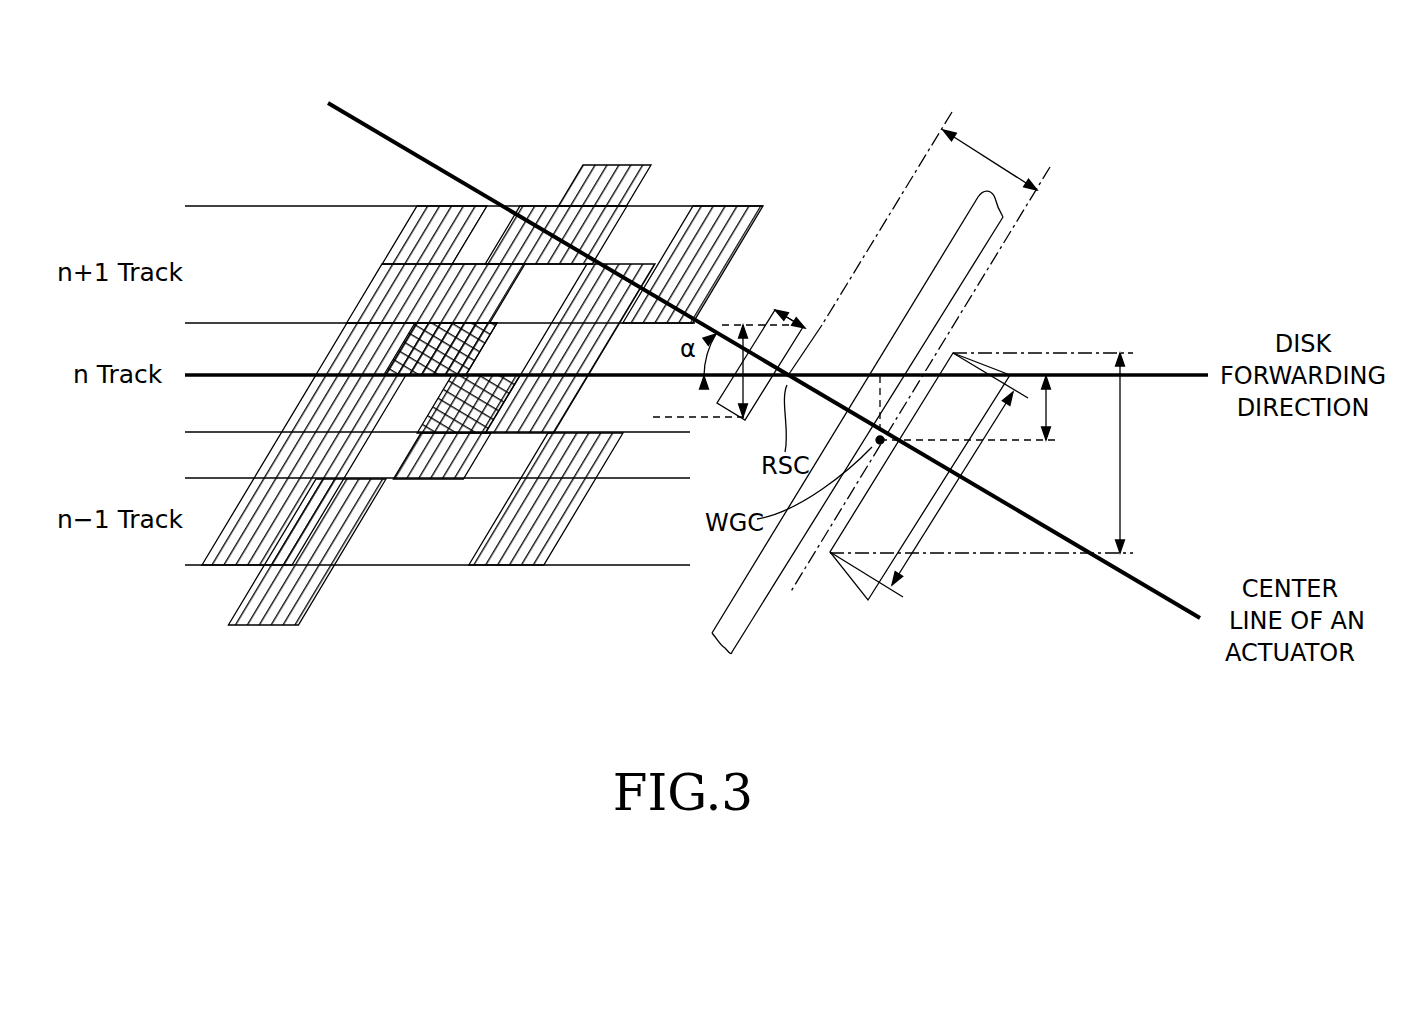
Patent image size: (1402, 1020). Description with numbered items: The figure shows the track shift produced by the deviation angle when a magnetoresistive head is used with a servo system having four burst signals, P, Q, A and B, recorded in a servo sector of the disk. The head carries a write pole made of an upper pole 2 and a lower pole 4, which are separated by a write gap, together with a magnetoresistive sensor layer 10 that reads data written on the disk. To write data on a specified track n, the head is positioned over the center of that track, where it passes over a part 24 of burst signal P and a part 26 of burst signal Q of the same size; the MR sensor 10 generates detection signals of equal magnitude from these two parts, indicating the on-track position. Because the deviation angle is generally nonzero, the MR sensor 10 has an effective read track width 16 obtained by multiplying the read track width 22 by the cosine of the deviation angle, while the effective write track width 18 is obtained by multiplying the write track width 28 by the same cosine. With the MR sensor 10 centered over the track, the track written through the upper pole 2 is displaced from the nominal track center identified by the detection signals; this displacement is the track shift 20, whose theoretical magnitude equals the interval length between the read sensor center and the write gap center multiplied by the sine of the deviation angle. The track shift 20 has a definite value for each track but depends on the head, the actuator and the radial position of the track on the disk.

The upper pole 2 is at (862, 583).
The lower pole 4 is at (978, 237).
The magnetoresistive sensor layer 10 is at (812, 335).
The effective read track width 16 is at (707, 378).
The effective write track width 18 is at (1139, 453).
The track shift 20 is at (1063, 408).
The read track width 22 is at (758, 330).
The part of burst signal P 24 is at (478, 350).
The part of burst signal Q 26 is at (443, 397).
The write track width 28 is at (933, 522).